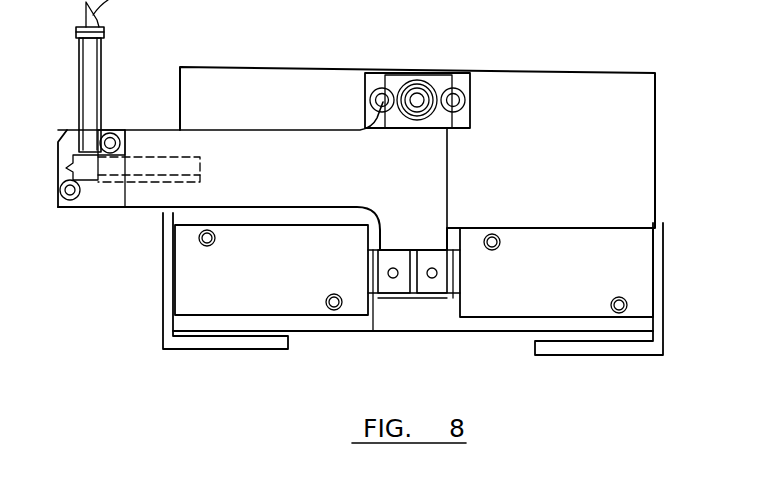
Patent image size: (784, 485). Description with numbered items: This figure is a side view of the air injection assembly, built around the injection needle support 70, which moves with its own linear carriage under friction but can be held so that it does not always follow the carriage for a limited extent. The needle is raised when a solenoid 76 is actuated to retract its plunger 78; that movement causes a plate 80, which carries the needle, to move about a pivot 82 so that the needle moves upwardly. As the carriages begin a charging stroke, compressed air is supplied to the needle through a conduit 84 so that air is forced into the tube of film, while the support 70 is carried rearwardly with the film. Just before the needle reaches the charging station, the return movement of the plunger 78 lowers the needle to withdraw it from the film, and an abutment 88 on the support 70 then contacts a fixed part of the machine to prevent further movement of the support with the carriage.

The injection needle support 70 is at (658, 200).
The solenoid 76 is at (302, 290).
The plunger 78 is at (373, 296).
The plate 80 is at (258, 163).
The pivot 82 is at (418, 100).
The conduit 84 is at (200, 157).
The abutment 88 is at (657, 283).